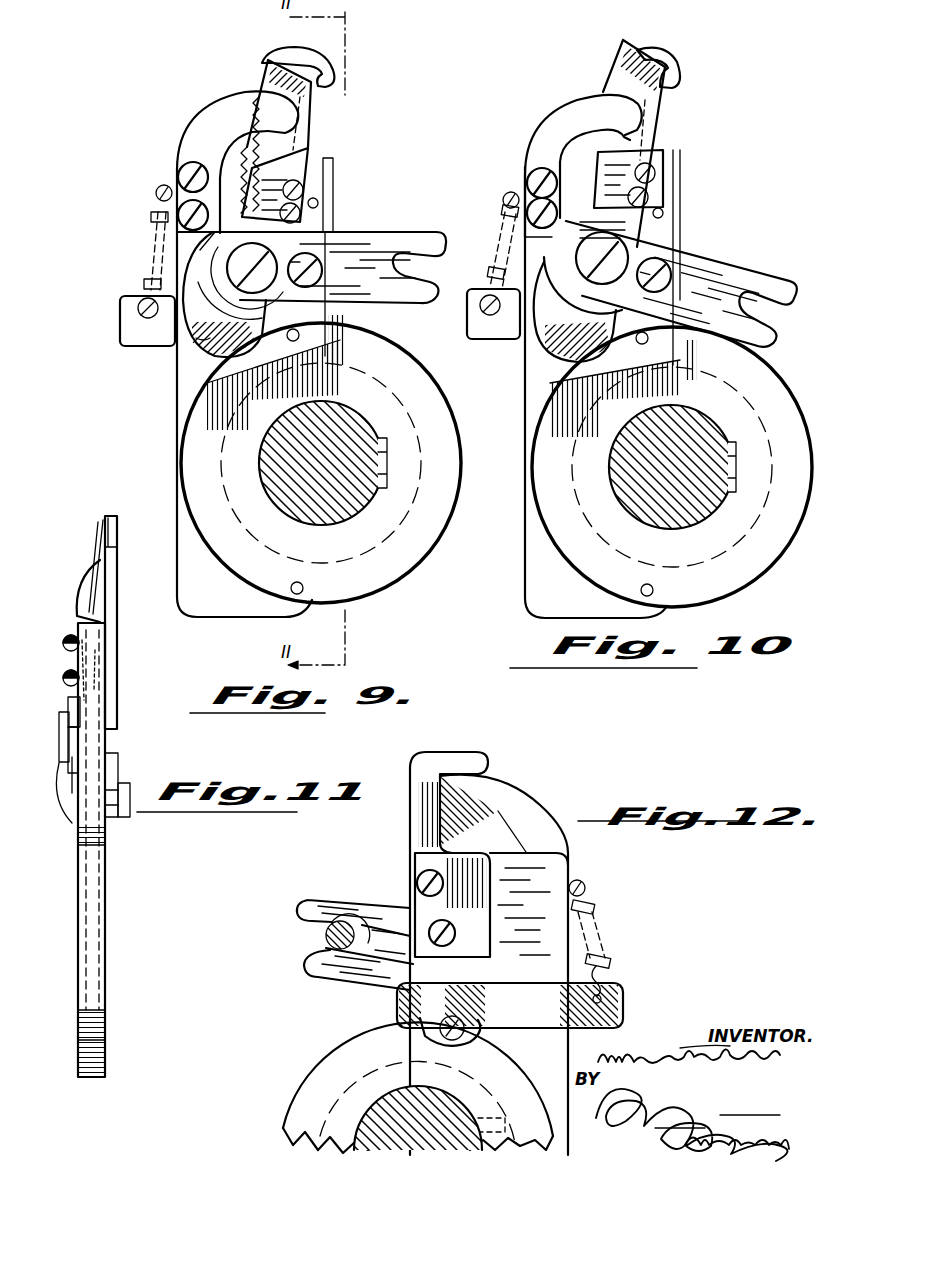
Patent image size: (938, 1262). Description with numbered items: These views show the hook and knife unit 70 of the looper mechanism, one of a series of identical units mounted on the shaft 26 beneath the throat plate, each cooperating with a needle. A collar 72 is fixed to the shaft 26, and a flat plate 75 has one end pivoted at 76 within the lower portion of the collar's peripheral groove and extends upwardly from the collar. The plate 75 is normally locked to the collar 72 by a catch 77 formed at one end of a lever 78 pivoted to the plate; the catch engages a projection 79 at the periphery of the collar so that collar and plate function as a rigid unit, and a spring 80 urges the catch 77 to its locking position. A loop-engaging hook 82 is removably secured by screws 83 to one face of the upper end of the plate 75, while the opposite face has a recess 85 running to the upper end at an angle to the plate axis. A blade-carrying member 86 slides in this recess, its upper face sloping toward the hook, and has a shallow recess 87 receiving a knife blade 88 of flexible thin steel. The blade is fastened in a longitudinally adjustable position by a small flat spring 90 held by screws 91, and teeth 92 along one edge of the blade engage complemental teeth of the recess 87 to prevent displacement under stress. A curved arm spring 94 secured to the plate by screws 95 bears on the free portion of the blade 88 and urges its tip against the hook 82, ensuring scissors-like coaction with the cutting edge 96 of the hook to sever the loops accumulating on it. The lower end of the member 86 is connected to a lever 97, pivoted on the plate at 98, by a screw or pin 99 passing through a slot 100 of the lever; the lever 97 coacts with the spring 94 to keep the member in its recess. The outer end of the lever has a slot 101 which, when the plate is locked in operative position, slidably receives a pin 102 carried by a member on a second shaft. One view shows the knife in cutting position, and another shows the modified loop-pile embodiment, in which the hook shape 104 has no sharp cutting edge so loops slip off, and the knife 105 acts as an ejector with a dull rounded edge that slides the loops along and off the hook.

In FIG. 9, the shaft 26 is at (262, 460).
In FIG. 10, the shaft 26 is at (708, 425).
In FIG. 12, the shaft 26 is at (418, 1118).
In FIG. 9, the hook and knife unit 70 is at (160, 451).
In FIG. 10, the hook and knife unit 70 is at (760, 228).
In FIG. 11, the hook and knife unit 70 is at (115, 892).
In FIG. 9, the collar 72 is at (440, 527).
In FIG. 10, the collar 72 is at (778, 540).
In FIG. 11, the collar 72 is at (113, 777).
In FIG. 12, the collar 72 is at (320, 1082).
In FIG. 9, the plate 75 is at (197, 385).
In FIG. 10, the plate 75 is at (533, 392).
In FIG. 11, the plate 75 is at (95, 963).
In FIG. 12, the plate 75 is at (560, 877).
In FIG. 9, the pivot 76 is at (294, 596).
In FIG. 10, the pivot 76 is at (655, 592).
In FIG. 12, the catch 77 is at (400, 998).
In FIG. 9, the lever 78 is at (132, 322).
In FIG. 10, the lever 78 is at (485, 330).
In FIG. 11, the lever 78 is at (113, 820).
In FIG. 12, the lever 78 is at (600, 1010).
In FIG. 12, the projection 79 is at (420, 1036).
In FIG. 9, the spring 80 is at (160, 222).
In FIG. 10, the spring 80 is at (493, 270).
In FIG. 12, the spring 80 is at (602, 912).
In FIG. 9, the loop-engaging hook 82 is at (290, 50).
In FIG. 10, the loop-engaging hook 82 is at (670, 65).
In FIG. 11, the loop-engaging hook 82 is at (113, 600).
In FIG. 12, the screws 83 is at (438, 922).
In FIG. 9, the recess 85 is at (207, 352).
In FIG. 10, the recess 85 is at (540, 345).
In FIG. 11, the recess 85 is at (120, 832).
In FIG. 9, the blade-carrying member 86 is at (312, 150).
In FIG. 10, the blade-carrying member 86 is at (668, 152).
In FIG. 11, the blade-carrying member 86 is at (92, 668).
In FIG. 9, the shallow recess 87 is at (203, 249).
In FIG. 10, the shallow recess 87 is at (660, 223).
In FIG. 9, the knife blade 88 is at (300, 128).
In FIG. 10, the knife blade 88 is at (666, 124).
In FIG. 11, the knife blade 88 is at (97, 548).
In FIG. 9, the flat spring 90 is at (300, 186).
In FIG. 10, the flat spring 90 is at (655, 174).
In FIG. 9, the screws 91 is at (298, 210).
In FIG. 10, the screws 91 is at (648, 196).
In FIG. 9, the teeth 92 is at (246, 145).
In FIG. 9, the curved arm spring 94 is at (210, 120).
In FIG. 10, the curved arm spring 94 is at (560, 120).
In FIG. 11, the curved arm spring 94 is at (85, 588).
In FIG. 12, the curved arm spring 94 is at (510, 800).
In FIG. 9, the screws 95 is at (163, 186).
In FIG. 10, the screws 95 is at (512, 193).
In FIG. 11, the screws 95 is at (66, 640).
In FIG. 9, the cutting edge 96 is at (336, 80).
In FIG. 10, the cutting edge 96 is at (682, 86).
In FIG. 9, the lever 97 is at (420, 236).
In FIG. 10, the lever 97 is at (735, 272).
In FIG. 11, the lever 97 is at (78, 715).
In FIG. 12, the lever 97 is at (335, 972).
In FIG. 9, the pivot 98 is at (320, 266).
In FIG. 10, the pivot 98 is at (663, 274).
In FIG. 11, the pivot 98 is at (78, 745).
In FIG. 9, the screw or pin 99 is at (258, 325).
In FIG. 10, the screw or pin 99 is at (630, 248).
In FIG. 11, the screw or pin 99 is at (104, 836).
In FIG. 9, the slot 100 is at (268, 262).
In FIG. 10, the slot 100 is at (602, 258).
In FIG. 9, the slot 101 is at (430, 292).
In FIG. 10, the slot 101 is at (765, 332).
In FIG. 12, the slot 101 is at (357, 924).
In FIG. 12, the pin 102 is at (326, 938).
In FIG. 12, the modified hook 104 is at (462, 757).
In FIG. 12, the knife 105 is at (470, 790).